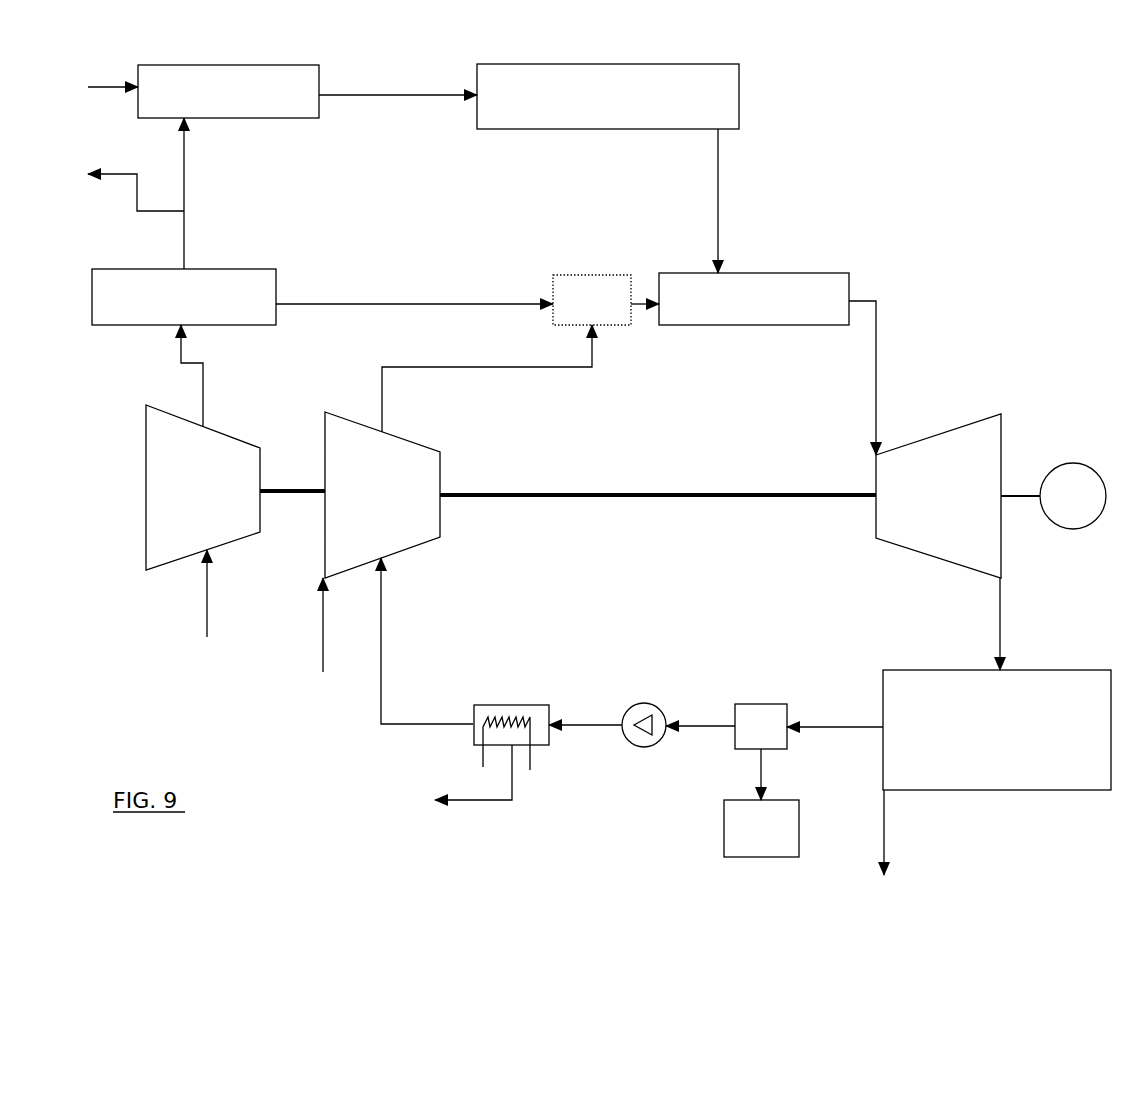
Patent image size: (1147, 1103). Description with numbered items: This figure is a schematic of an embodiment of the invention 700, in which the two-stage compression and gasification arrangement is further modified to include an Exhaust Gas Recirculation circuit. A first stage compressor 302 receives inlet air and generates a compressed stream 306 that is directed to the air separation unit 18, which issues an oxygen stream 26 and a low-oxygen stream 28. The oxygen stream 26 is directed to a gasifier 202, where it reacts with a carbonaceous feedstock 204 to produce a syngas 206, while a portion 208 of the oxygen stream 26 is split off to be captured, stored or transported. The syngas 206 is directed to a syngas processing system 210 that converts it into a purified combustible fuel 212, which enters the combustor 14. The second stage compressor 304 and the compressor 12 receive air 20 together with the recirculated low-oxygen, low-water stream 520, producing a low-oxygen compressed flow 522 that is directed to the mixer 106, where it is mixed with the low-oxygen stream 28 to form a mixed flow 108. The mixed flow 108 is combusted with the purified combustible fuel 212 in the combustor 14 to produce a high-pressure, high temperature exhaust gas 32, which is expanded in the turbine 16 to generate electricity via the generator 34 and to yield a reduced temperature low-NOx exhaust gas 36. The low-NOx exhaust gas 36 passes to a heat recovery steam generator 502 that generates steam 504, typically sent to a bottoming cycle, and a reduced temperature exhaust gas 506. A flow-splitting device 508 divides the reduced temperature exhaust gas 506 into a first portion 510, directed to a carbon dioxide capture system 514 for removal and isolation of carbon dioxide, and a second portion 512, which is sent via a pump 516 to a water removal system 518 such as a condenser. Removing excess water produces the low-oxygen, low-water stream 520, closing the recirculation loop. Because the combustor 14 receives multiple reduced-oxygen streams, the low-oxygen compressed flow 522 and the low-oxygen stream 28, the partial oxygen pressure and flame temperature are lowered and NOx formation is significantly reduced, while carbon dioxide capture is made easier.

The embodiment of the invention 700 is at (78, 55).
The gasifier 202 is at (207, 109).
The carbonaceous feedstock 204 is at (88, 87).
The syngas 206 is at (398, 78).
The syngas processing system 210 is at (587, 109).
The purified combustible fuel 212 is at (746, 201).
The portion of oxygen stream 208 is at (112, 179).
The oxygen stream 26 is at (206, 193).
The air separation unit 18 is at (170, 315).
The low-oxygen stream 28 is at (414, 288).
The mixer 106 is at (571, 315).
The mixed flow 108 is at (646, 297).
The combustor 14 is at (740, 314).
The high temperature exhaust gas 32 is at (882, 378).
The generator 34 is at (1072, 463).
The turbine 16 is at (924, 506).
The first stage compressor 302 is at (182, 500).
The compressed stream 306 is at (166, 375).
The second stage compressor 304 is at (218, 610).
The compressor 12 is at (368, 508).
The air 20 is at (327, 640).
The low-oxygen compressed flow 522 is at (487, 378).
The low-oxygen, low-water stream 520 is at (427, 641).
The water removal system 518 is at (510, 705).
The pump 516 is at (641, 703).
The second portion 512 is at (700, 712).
The flow-splitting device 508 is at (740, 735).
The reduced temperature exhaust gas 506 is at (835, 718).
The heat recovery steam generator 502 is at (976, 728).
The first portion 510 is at (788, 774).
The carbon dioxide capture system 514 is at (740, 835).
The low-NOx exhaust gas 36 is at (1021, 624).
The steam 504 is at (883, 854).